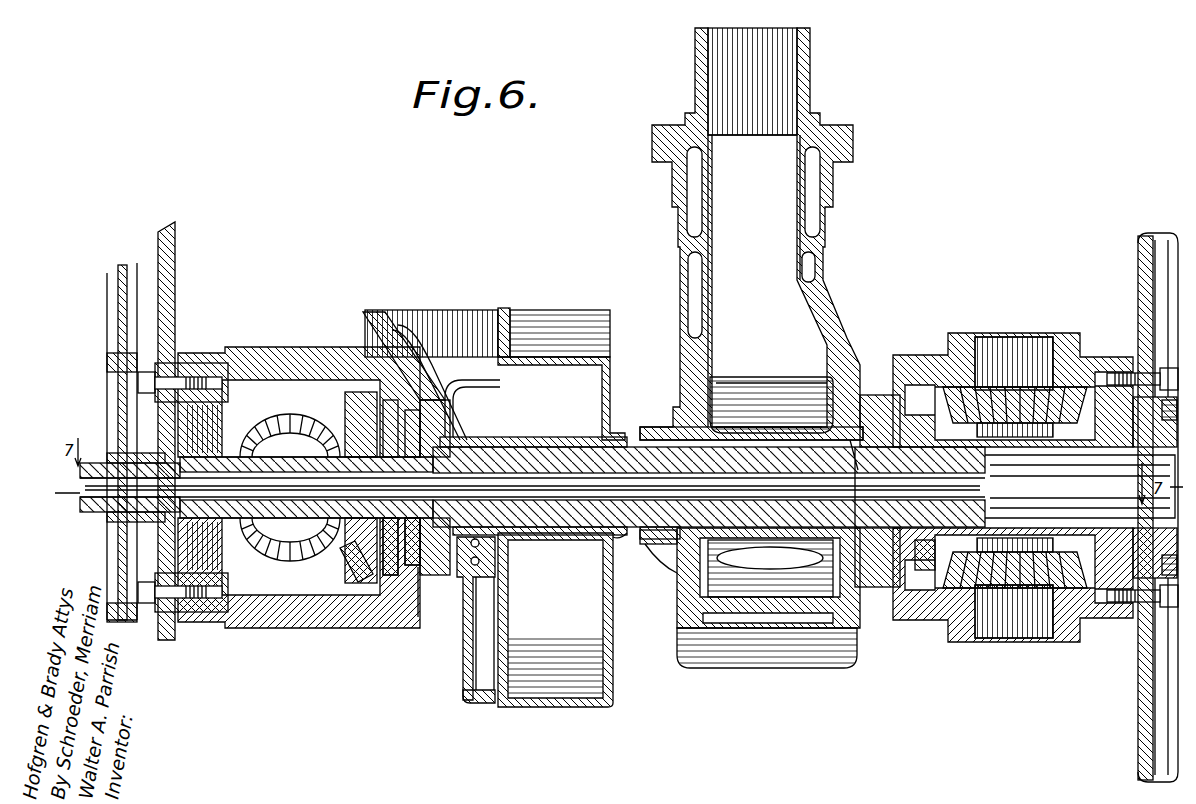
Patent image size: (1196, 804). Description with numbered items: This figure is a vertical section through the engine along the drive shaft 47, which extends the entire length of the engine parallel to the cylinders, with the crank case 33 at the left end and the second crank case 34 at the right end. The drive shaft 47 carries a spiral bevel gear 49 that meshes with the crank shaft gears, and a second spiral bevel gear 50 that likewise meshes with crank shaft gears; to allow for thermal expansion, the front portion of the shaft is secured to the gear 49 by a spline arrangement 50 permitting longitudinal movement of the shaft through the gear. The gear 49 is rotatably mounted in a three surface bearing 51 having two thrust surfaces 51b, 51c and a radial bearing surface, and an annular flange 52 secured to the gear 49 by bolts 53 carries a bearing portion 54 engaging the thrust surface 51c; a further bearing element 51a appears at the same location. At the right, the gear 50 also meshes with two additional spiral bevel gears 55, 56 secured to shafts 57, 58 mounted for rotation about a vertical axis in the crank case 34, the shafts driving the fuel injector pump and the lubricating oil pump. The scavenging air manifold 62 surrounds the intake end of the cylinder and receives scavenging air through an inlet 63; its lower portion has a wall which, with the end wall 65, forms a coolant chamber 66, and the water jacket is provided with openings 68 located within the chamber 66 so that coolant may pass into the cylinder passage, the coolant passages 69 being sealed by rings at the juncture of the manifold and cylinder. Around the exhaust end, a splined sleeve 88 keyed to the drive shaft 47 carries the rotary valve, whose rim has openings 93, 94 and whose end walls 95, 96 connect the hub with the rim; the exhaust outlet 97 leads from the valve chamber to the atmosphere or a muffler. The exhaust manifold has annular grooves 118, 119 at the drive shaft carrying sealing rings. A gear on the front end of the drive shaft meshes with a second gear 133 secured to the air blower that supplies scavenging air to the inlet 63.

The crank case 33 is at (268, 347).
The second crank case 34 is at (1062, 333).
The drive shaft 47 is at (615, 445).
The spiral bevel gear 49 is at (343, 417).
The spiral bevel gear 50 is at (360, 385).
The three surface bearing 51 is at (430, 398).
The bearing race 51a is at (390, 590).
The thrust surface 51b is at (350, 562).
The thrust surface 51c is at (408, 590).
The annular flange 52 is at (118, 393).
The bolts 53 is at (440, 500).
The bearing portion 54 is at (418, 617).
The spiral bevel gear 55 is at (983, 393).
The spiral bevel gear 56 is at (1023, 577).
The shaft 57 is at (1013, 355).
The shaft 58 is at (1023, 640).
The scavenging air manifold 62 is at (606, 376).
The inlet 63 is at (500, 310).
The end wall 65 is at (468, 667).
The coolant chamber 66 is at (468, 698).
The openings 68 is at (475, 561).
The coolant passages 69 is at (790, 433).
The splined sleeve 88 is at (873, 393).
The opening 93 is at (700, 603).
The opening 94 is at (820, 372).
The end wall 95 is at (742, 562).
The end wall 96 is at (855, 600).
The exhaust outlet 97 is at (790, 185).
The annular groove 118 is at (648, 547).
The annular groove 119 is at (857, 490).
The second gear 133 is at (120, 290).